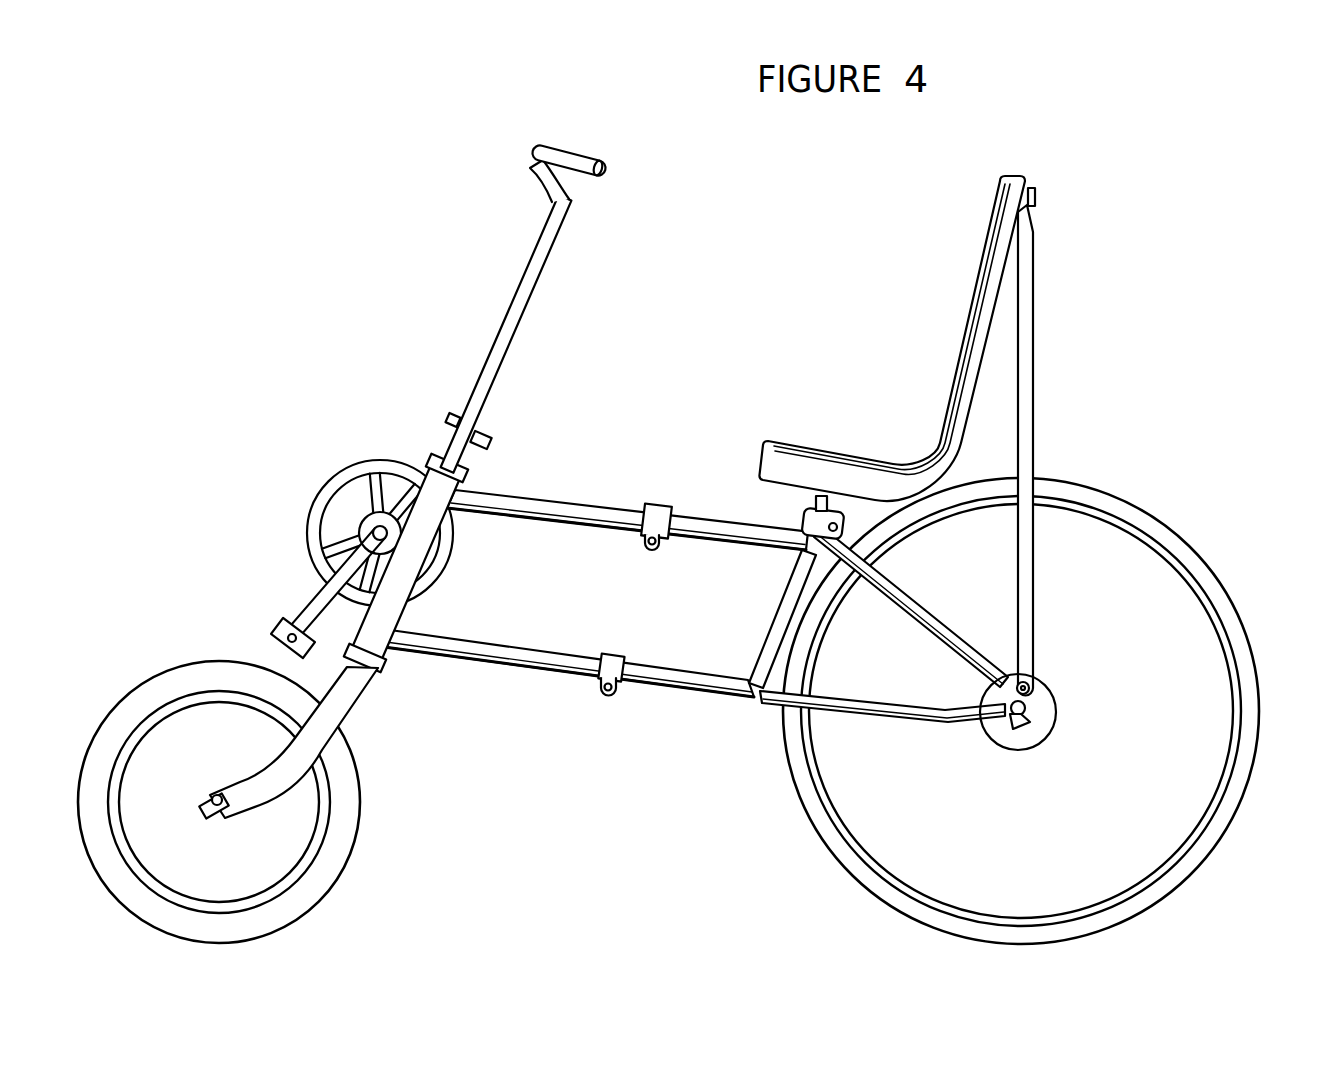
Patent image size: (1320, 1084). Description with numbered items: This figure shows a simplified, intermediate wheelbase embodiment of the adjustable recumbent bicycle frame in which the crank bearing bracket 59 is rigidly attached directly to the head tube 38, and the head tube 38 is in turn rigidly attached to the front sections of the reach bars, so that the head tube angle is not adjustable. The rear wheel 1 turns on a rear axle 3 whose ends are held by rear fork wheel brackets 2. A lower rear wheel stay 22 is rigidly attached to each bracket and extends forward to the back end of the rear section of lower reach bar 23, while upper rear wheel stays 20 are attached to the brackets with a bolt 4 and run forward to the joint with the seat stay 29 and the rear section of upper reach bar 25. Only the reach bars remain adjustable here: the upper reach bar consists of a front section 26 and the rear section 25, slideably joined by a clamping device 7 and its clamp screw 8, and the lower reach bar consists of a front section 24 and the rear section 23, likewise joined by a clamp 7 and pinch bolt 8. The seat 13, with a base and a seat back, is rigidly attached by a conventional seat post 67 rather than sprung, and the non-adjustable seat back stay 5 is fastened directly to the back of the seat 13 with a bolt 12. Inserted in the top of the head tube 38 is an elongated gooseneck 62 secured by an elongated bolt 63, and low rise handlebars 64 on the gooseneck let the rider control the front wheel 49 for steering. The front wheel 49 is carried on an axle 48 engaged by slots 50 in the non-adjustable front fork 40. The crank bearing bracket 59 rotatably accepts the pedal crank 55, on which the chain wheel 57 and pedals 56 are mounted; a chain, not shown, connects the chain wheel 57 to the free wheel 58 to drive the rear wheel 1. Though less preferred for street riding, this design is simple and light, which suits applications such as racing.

The rear wheel 1 is at (1156, 529).
The rear fork wheel bracket 2 is at (1040, 704).
The rear axle 3 is at (1027, 719).
The bolt 4 is at (1030, 686).
The seat back stay 5 is at (1027, 392).
The clamping device 7 is at (656, 510).
The clamp screw 8 is at (653, 545).
The bolt 12 is at (1037, 197).
The seat 13 is at (973, 327).
The upper rear wheel stay 20 is at (914, 617).
The lower rear wheel stay 22 is at (916, 724).
The rear section of lower reach bar 23 is at (691, 683).
The front section of lower reach bar 24 is at (478, 650).
The rear section of upper reach bar 25 is at (705, 527).
The front section of upper reach bar 26 is at (554, 503).
The seat stay 29 is at (782, 613).
The head tube 38 is at (418, 543).
The front fork 40 is at (342, 700).
The axle 48 is at (215, 797).
The front wheel 49 is at (330, 853).
The slots 50 is at (213, 807).
The pedal crank 55 is at (313, 607).
The pedals 56 is at (448, 416).
The chain wheel 57 is at (358, 475).
The free wheel 58 is at (1020, 741).
The crank bearing bracket 59 is at (373, 528).
The gooseneck 62 is at (517, 310).
The bolt 63 is at (569, 198).
The handlebars 64 is at (535, 153).
The seat post 67 is at (822, 500).